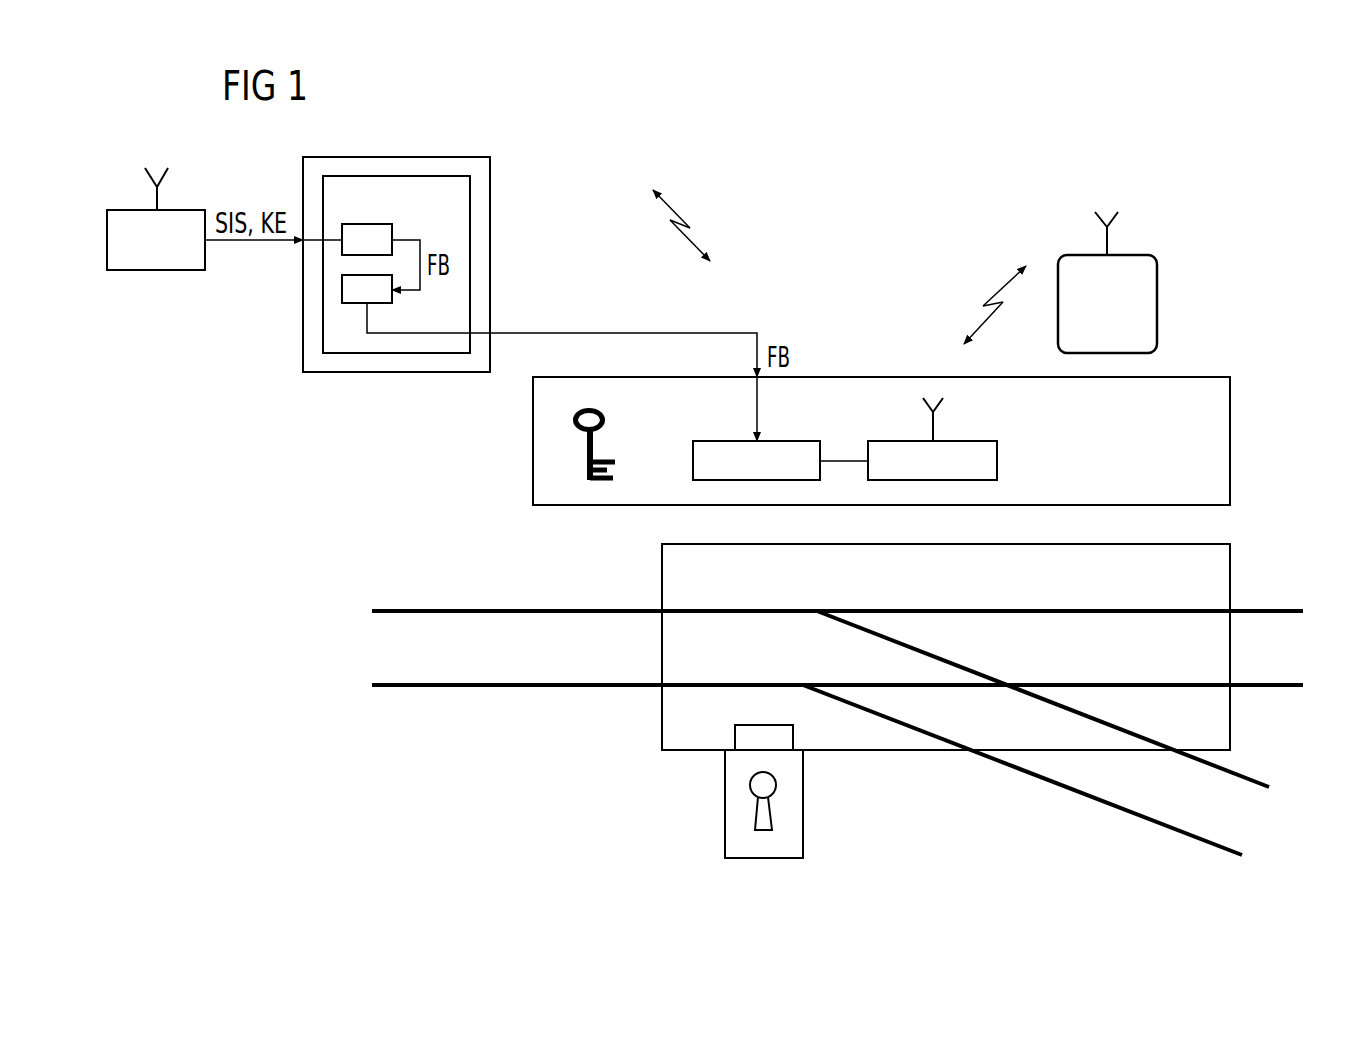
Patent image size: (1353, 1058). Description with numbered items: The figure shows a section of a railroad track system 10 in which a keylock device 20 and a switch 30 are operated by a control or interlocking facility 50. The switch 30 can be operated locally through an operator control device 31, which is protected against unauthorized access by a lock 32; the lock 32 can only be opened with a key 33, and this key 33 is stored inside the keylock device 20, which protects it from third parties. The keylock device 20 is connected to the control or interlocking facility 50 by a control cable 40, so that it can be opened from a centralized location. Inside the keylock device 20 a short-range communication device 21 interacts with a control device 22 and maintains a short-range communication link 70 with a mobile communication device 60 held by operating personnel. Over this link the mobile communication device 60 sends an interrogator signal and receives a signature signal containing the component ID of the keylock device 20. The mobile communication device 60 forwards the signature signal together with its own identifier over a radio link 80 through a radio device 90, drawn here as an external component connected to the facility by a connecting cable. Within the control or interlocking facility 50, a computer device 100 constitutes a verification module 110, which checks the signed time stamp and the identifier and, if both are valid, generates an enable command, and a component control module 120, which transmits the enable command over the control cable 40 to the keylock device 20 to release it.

The railroad track system 10 is at (442, 608).
The keylock device 20 is at (533, 413).
The short-range communication device 21 is at (972, 441).
The control device 22 is at (720, 441).
The switch 30 is at (662, 577).
The operator control device 31 is at (735, 737).
The lock 32 is at (725, 825).
The key 33 is at (587, 474).
The control cable 40 is at (600, 333).
The control or interlocking facility 50 is at (490, 160).
The mobile communication device 60 is at (1157, 312).
The short-range communication link 70 is at (978, 318).
The radio link 80 is at (693, 237).
The radio device 90 is at (157, 270).
The computer device 100 is at (470, 190).
The verification module 110 is at (392, 233).
The component control module 120 is at (392, 300).